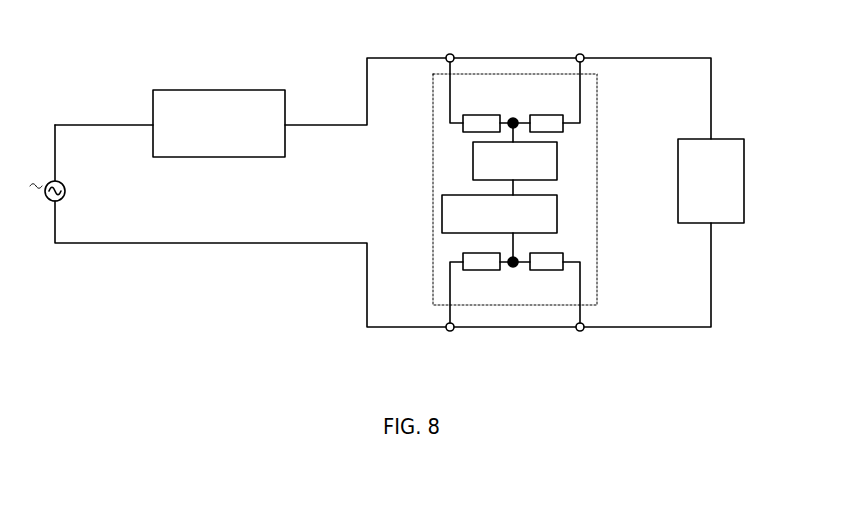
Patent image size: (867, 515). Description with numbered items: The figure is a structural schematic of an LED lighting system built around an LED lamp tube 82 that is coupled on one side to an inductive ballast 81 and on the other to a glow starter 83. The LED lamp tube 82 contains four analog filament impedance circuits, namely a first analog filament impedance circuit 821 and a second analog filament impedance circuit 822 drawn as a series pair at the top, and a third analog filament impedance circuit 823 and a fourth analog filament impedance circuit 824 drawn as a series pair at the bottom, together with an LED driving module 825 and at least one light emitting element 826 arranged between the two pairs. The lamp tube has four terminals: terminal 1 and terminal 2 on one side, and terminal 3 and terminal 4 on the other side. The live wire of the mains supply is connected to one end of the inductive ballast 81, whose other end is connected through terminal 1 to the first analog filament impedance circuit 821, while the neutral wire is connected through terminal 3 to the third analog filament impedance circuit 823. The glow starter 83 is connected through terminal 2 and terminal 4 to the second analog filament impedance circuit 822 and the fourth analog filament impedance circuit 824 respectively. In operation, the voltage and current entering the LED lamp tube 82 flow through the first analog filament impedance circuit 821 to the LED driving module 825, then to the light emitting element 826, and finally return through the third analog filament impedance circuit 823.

The terminal 1 is at (450, 43).
The terminal 2 is at (580, 43).
The terminal 3 is at (450, 347).
The terminal 4 is at (580, 347).
The inductive ballast 81 is at (206, 90).
The LED lamp tube 82 is at (433, 176).
The first analog filament impedance circuit 821 is at (462, 126).
The second analog filament impedance circuit 822 is at (565, 121).
The third analog filament impedance circuit 823 is at (463, 255).
The fourth analog filament impedance circuit 824 is at (565, 259).
The LED driving module 825 is at (557, 163).
The light emitting element 826 is at (558, 219).
The glow starter 83 is at (734, 139).